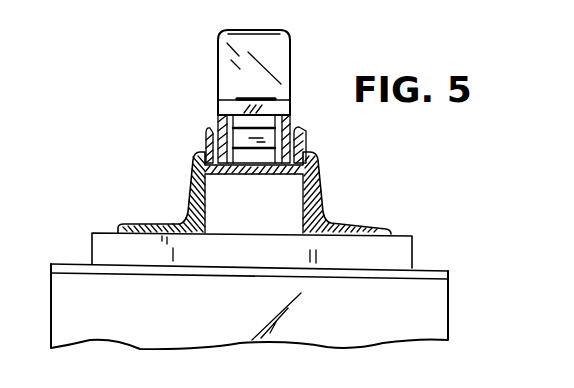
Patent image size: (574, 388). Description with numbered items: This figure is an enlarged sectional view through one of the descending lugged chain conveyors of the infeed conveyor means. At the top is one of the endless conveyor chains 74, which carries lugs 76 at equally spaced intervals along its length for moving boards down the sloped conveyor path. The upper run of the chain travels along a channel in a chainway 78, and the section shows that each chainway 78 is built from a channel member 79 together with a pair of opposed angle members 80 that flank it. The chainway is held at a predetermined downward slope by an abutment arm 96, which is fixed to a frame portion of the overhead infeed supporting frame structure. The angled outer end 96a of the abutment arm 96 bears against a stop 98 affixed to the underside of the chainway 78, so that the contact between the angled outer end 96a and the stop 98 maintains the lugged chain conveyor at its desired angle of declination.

The endless conveyor chain 74 is at (288, 125).
The lug 76 is at (293, 73).
The chainway 78 is at (199, 139).
The channel member 79 is at (306, 140).
The angle member 80 is at (193, 178).
The abutment arm 96 is at (450, 307).
The angled outer end 96a is at (446, 268).
The stop 98 is at (413, 237).